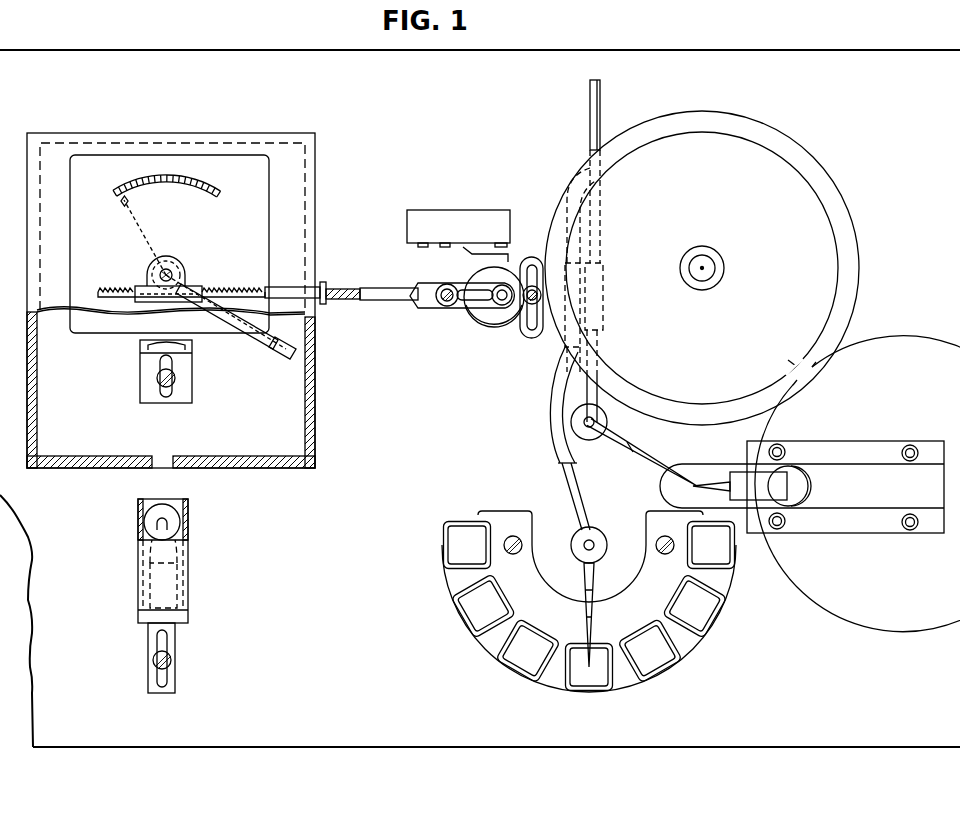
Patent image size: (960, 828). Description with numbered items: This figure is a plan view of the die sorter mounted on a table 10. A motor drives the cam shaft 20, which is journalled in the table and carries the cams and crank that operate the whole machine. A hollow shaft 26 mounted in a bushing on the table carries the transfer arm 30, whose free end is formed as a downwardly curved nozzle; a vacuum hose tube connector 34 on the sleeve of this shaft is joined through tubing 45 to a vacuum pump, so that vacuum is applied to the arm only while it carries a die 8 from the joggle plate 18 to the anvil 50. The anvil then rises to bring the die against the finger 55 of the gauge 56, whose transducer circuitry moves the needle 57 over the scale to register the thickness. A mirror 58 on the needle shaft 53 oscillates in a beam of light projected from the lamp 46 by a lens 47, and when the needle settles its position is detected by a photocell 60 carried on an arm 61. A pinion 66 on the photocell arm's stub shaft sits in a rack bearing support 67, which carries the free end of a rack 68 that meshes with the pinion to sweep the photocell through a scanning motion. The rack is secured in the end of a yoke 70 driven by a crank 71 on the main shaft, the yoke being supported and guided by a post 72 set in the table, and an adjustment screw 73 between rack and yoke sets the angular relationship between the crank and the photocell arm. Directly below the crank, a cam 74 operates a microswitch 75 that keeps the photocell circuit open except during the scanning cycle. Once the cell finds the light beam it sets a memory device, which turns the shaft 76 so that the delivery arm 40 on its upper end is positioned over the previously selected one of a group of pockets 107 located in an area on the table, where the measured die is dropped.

The die 8 is at (706, 418).
The table 10 is at (299, 618).
The joggle plate 18 is at (792, 212).
The cam shaft 20 is at (503, 305).
The hollow shaft 26 is at (590, 434).
The transfer arm 30 is at (643, 455).
The vacuum hose tube connector 34 is at (574, 488).
The delivery arm 40 is at (591, 580).
The tubing 45 is at (590, 110).
The lamp 46 is at (143, 522).
The lens 47 is at (143, 348).
The anvil 50 is at (676, 496).
The needle shaft 53 is at (166, 272).
The finger 55 is at (716, 485).
The gauge 56 is at (232, 240).
The needle 57 is at (137, 221).
The mirror 58 is at (181, 268).
The photocell 60 is at (276, 344).
The arm 61 is at (243, 322).
The pinion 66 is at (152, 263).
The rack bearing support 67 is at (152, 302).
The rack 68 is at (118, 291).
The yoke 70 is at (430, 306).
The crank 71 is at (490, 322).
The post 72 is at (448, 304).
The adjustment screw 73 is at (324, 289).
The cam 74 is at (474, 274).
The microswitch 75 is at (460, 222).
The shaft 76 is at (592, 542).
The pockets 107 is at (655, 665).